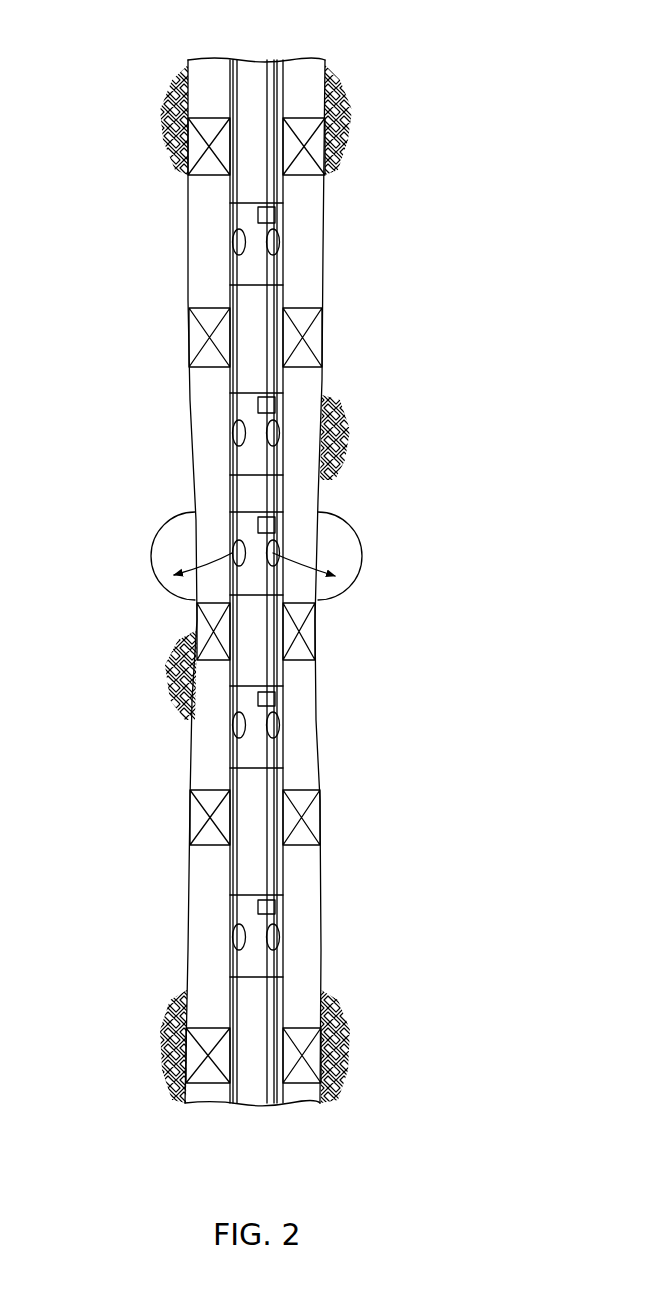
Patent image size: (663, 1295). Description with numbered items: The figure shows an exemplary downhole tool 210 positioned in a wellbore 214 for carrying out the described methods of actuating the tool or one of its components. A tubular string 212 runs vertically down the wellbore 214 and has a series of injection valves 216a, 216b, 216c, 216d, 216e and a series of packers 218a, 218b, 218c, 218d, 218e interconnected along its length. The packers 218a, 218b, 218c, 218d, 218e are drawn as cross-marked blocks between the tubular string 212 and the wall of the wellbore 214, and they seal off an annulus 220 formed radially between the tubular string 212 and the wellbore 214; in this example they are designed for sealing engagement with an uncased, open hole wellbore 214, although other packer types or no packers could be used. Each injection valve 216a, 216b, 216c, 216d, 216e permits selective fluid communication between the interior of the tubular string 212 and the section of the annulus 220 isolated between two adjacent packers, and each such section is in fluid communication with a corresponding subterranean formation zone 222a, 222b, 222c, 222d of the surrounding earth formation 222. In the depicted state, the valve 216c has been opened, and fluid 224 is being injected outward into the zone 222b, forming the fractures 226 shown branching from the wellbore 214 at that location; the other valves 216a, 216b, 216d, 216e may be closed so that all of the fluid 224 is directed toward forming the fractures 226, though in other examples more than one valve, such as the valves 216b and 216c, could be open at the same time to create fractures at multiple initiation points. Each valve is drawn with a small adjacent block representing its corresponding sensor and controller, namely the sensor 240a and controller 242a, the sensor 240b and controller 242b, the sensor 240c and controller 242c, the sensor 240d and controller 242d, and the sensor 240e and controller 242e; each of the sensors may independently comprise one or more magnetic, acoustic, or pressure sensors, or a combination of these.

The downhole tool 210 is at (470, 70).
The tubular string 212 is at (292, 69).
The wellbore 214 is at (322, 265).
The injection valve 216a is at (232, 237).
The injection valve 216b is at (232, 428).
The injection valve 216c is at (234, 545).
The injection valve 216d is at (232, 717).
The injection valve 216e is at (232, 930).
The packer 218a is at (325, 175).
The packer 218b is at (189, 330).
The packer 218c is at (315, 632).
The packer 218d is at (320, 816).
The packer 218e is at (310, 1028).
The annulus 220 is at (190, 420).
The earth formation 222 is at (85, 625).
The subterranean formation zone 222a is at (455, 231).
The subterranean formation zone 222b is at (463, 545).
The subterranean formation zone 222c is at (446, 723).
The subterranean formation zone 222d is at (447, 916).
The fluid 224 is at (197, 568).
The fractures 226 is at (152, 562).
The sensor 240a is at (165, 239).
The controller 242a is at (258, 211).
The sensor 240b is at (165, 430).
The controller 242b is at (258, 403).
The sensor 240c is at (373, 534).
The controller 242c is at (276, 522).
The sensor 240d is at (165, 723).
The controller 242d is at (258, 698).
The sensor 240e is at (165, 930).
The controller 242e is at (258, 903).